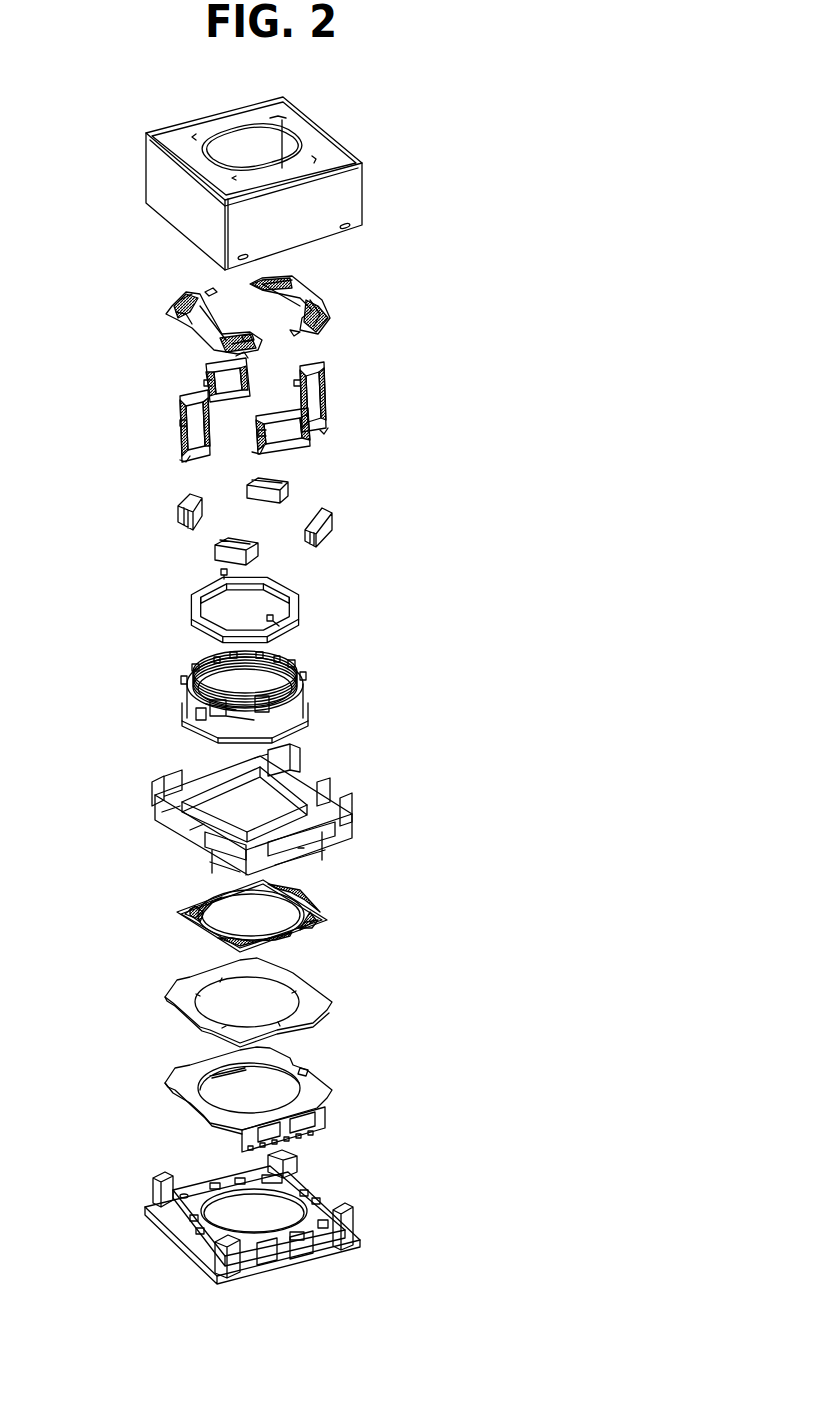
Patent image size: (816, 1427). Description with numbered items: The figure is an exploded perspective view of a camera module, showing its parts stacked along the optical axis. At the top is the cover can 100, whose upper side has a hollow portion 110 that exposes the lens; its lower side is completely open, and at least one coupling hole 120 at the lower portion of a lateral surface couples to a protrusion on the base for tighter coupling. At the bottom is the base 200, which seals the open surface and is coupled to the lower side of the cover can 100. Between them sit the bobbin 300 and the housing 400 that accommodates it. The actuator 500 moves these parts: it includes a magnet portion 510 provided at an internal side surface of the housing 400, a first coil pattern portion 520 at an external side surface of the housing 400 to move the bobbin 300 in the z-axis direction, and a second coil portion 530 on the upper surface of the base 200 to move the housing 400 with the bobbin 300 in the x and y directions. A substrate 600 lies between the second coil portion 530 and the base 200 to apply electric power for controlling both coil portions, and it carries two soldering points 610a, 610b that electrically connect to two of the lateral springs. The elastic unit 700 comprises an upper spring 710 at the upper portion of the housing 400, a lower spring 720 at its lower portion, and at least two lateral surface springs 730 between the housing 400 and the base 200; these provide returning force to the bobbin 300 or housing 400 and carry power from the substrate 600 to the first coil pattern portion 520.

The cover can 100 is at (314, 174).
The hollow portion 110 is at (278, 130).
The coupling hole 120 is at (332, 237).
The base 200 is at (358, 1217).
The bobbin 300 is at (305, 683).
The housing 400 is at (353, 813).
The actuator 500 is at (243, 756).
The magnet portion 510 is at (177, 498).
The first coil pattern portion 520 is at (187, 603).
The second coil portion 530 is at (180, 987).
The substrate 600 is at (272, 1090).
The soldering point 610a is at (190, 1102).
The soldering point 610b is at (333, 1095).
The elastic unit 700 is at (248, 614).
The upper spring 710 is at (340, 312).
The lower spring 720 is at (183, 903).
The lateral surface springs 730 is at (330, 402).